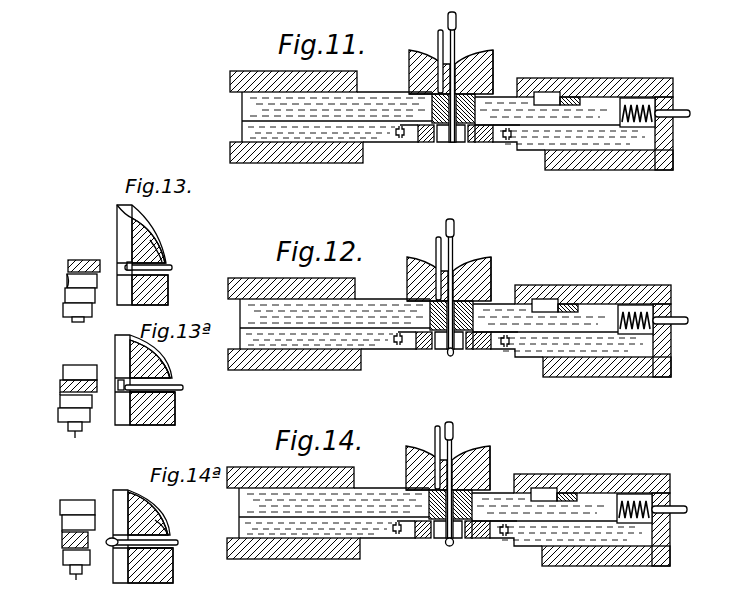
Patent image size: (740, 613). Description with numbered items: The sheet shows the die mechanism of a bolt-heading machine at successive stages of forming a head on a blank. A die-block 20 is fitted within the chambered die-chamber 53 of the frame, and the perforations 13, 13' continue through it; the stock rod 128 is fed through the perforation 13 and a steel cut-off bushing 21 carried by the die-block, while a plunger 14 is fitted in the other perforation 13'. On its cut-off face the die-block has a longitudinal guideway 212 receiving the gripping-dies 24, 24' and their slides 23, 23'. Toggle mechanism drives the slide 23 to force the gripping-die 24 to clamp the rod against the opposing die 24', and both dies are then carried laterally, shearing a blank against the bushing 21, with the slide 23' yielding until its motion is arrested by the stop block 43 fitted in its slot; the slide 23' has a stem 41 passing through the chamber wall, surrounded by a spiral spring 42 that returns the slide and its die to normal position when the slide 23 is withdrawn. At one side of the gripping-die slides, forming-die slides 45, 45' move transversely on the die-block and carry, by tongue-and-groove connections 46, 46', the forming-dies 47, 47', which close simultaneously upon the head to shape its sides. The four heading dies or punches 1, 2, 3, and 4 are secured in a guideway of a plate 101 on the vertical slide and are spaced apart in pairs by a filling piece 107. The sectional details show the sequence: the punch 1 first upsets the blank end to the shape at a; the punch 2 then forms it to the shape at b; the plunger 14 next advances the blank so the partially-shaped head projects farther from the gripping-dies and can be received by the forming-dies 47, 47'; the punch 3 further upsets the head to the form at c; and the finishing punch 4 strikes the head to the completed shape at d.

In FIG. 11, the die-chamber 53 is at (254, 63).
In FIG. 12, the die-chamber 53 is at (329, 313).
In FIG. 14, the die-chamber 53 is at (328, 502).
In FIG. 11, the stock rod 128 is at (440, 30).
In FIG. 12, the stock rod 128 is at (432, 255).
In FIG. 14, the stock rod 128 is at (431, 444).
In FIG. 13, the stock rod 128 is at (172, 270).
In FIG. 13A, the stock rod 128 is at (183, 388).
In FIG. 14A, the stock rod 128 is at (178, 542).
In FIG. 11, the plunger 14 is at (457, 28).
In FIG. 12, the plunger 14 is at (465, 278).
In FIG. 14, the plunger 14 is at (464, 471).
In FIG. 11, the perforation 13 is at (426, 59).
In FIG. 12, the perforation 13 is at (424, 266).
In FIG. 14, the perforation 13 is at (423, 455).
In FIG. 13, the perforation 13 is at (158, 255).
In FIG. 13A, the perforation 13 is at (161, 380).
In FIG. 14A, the perforation 13 is at (156, 536).
In FIG. 11, the perforation 13' is at (474, 63).
In FIG. 12, the perforation 13' is at (472, 270).
In FIG. 14, the perforation 13' is at (471, 459).
In FIG. 11, the die-block 20 is at (493, 60).
In FIG. 12, the die-block 20 is at (503, 273).
In FIG. 14, the die-block 20 is at (502, 462).
In FIG. 13, the die-block 20 is at (150, 240).
In FIG. 13A, the die-block 20 is at (166, 370).
In FIG. 14A, the die-block 20 is at (155, 520).
In FIG. 11, the cut-off bushing 21 is at (432, 97).
In FIG. 12, the cut-off bushing 21 is at (402, 282).
In FIG. 14, the cut-off bushing 21 is at (401, 471).
In FIG. 13, the longitudinal guideway 212 is at (162, 262).
In FIG. 13A, the longitudinal guideway 212 is at (170, 376).
In FIG. 14A, the longitudinal guideway 212 is at (168, 533).
In FIG. 11, the gripping-die 24 is at (435, 108).
In FIG. 12, the gripping-die 24 is at (431, 315).
In FIG. 14, the gripping-die 24 is at (430, 504).
In FIG. 13, the gripping-die 24 is at (136, 211).
In FIG. 13A, the gripping-die 24 is at (166, 404).
In FIG. 14A, the gripping-die 24 is at (162, 567).
In FIG. 11, the gripping-die 24' is at (510, 102).
In FIG. 12, the gripping-die 24' is at (508, 309).
In FIG. 14, the gripping-die 24' is at (507, 500).
In FIG. 11, the stop block 43 is at (556, 92).
In FIG. 12, the stop block 43 is at (556, 286).
In FIG. 14, the stop block 43 is at (555, 475).
In FIG. 11, the spiral spring 42 is at (673, 94).
In FIG. 12, the spiral spring 42 is at (614, 331).
In FIG. 14, the spiral spring 42 is at (613, 520).
In FIG. 11, the stem 41 is at (690, 116).
In FIG. 12, the stem 41 is at (669, 319).
In FIG. 14, the stem 41 is at (668, 508).
In FIG. 11, the gripping-die slide 23 is at (337, 109).
In FIG. 12, the gripping-die slide 23 is at (335, 316).
In FIG. 14, the gripping-die slide 23 is at (334, 505).
In FIG. 11, the gripping-die slide 23' is at (565, 114).
In FIG. 12, the gripping-die slide 23' is at (563, 321).
In FIG. 14, the gripping-die slide 23' is at (562, 510).
In FIG. 11, the forming-die slide 45 is at (321, 134).
In FIG. 12, the forming-die slide 45 is at (319, 341).
In FIG. 14, the forming-die slide 45 is at (318, 530).
In FIG. 11, the forming-die slide 45' is at (572, 140).
In FIG. 12, the forming-die slide 45' is at (570, 347).
In FIG. 14, the forming-die slide 45' is at (569, 536).
In FIG. 11, the tongue-and-groove connection 46 is at (394, 146).
In FIG. 12, the tongue-and-groove connection 46 is at (392, 353).
In FIG. 14, the tongue-and-groove connection 46 is at (391, 542).
In FIG. 11, the tongue-and-groove connection 46' is at (500, 149).
In FIG. 12, the tongue-and-groove connection 46' is at (503, 358).
In FIG. 14, the tongue-and-groove connection 46' is at (496, 547).
In FIG. 11, the forming-die 47 is at (432, 151).
In FIG. 12, the forming-die 47 is at (430, 358).
In FIG. 14, the forming-die 47 is at (429, 547).
In FIG. 13, the forming-die 47 is at (114, 284).
In FIG. 13A, the forming-die 47 is at (111, 368).
In FIG. 14A, the forming-die 47 is at (114, 572).
In FIG. 11, the forming-die 47' is at (494, 155).
In FIG. 12, the forming-die 47' is at (489, 362).
In FIG. 14, the forming-die 47' is at (491, 541).
In FIG. 13, the heading die 1 is at (100, 262).
In FIG. 13A, the heading die 1 is at (80, 372).
In FIG. 14A, the heading die 1 is at (77, 507).
In FIG. 13, the heading die 2 is at (82, 281).
In FIG. 13A, the heading die 2 is at (95, 390).
In FIG. 14A, the heading die 2 is at (78, 522).
In FIG. 13, the heading die 3 is at (80, 295).
In FIG. 13A, the heading die 3 is at (76, 402).
In FIG. 14A, the heading die 3 is at (62, 545).
In FIG. 13, the finishing heading-die 4 is at (77, 312).
In FIG. 13A, the finishing heading-die 4 is at (74, 419).
In FIG. 14A, the finishing heading-die 4 is at (76, 562).
In FIG. 13, the filling piece 107 is at (66, 290).
In FIG. 13A, the filling piece 107 is at (60, 398).
In FIG. 14A, the filling piece 107 is at (62, 532).
In FIG. 13A, the plate 101 is at (78, 432).
In FIG. 14A, the plate 101 is at (78, 575).
In FIG. 13, the partially-formed head a is at (129, 262).
In FIG. 12, the partially-formed head b is at (449, 360).
In FIG. 13A, the partially-formed head b is at (122, 392).
In FIG. 14A, the partially-formed head c is at (115, 538).
In FIG. 14, the finished head d is at (446, 551).